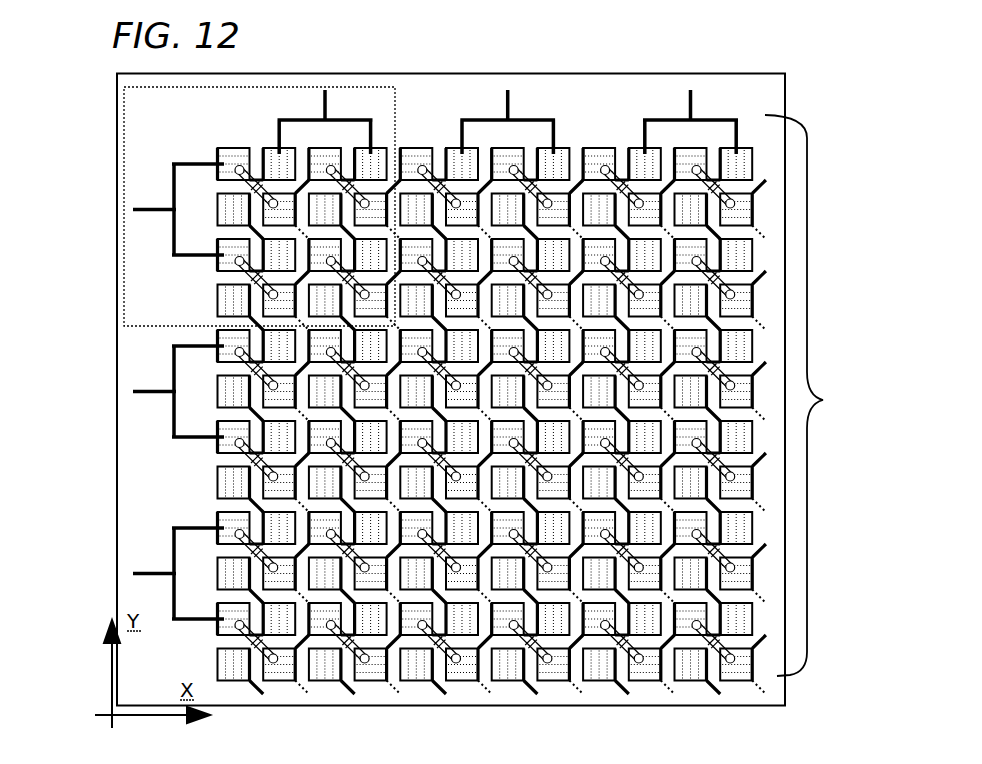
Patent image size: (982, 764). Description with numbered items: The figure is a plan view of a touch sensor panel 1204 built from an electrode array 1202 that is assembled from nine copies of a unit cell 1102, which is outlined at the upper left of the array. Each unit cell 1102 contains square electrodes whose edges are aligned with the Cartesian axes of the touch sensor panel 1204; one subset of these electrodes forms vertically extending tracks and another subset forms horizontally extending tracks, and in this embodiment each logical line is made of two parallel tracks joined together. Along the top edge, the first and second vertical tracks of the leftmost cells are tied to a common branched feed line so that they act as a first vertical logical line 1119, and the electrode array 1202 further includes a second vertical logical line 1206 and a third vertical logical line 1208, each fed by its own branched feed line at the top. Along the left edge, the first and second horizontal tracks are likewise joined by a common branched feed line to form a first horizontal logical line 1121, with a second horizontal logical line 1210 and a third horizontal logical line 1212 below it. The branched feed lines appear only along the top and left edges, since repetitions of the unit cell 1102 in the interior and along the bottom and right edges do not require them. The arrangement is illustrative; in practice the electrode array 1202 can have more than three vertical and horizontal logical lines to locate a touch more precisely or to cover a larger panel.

The unit cell 1102 is at (352, 88).
The first vertical logical line 1119 is at (323, 114).
The first horizontal logical line 1121 is at (175, 200).
The electrode array 1202 is at (547, 404).
The touch sensor panel 1204 is at (717, 90).
The second vertical logical line 1206 is at (510, 116).
The third vertical logical line 1208 is at (673, 120).
The second horizontal logical line 1210 is at (175, 382).
The third horizontal logical line 1212 is at (175, 565).